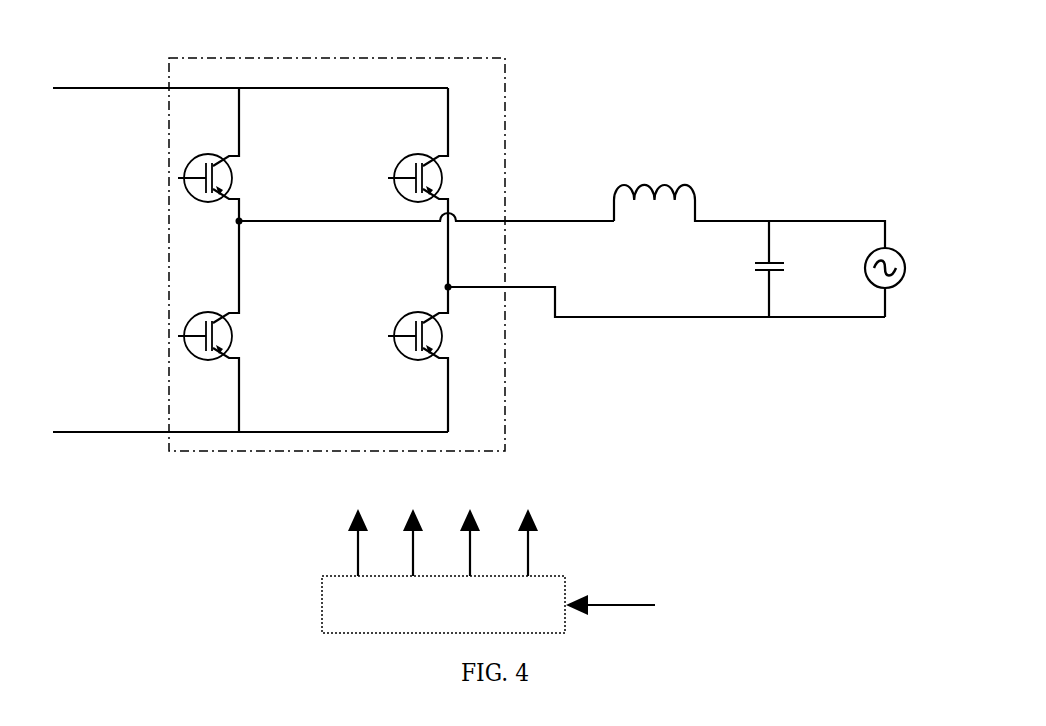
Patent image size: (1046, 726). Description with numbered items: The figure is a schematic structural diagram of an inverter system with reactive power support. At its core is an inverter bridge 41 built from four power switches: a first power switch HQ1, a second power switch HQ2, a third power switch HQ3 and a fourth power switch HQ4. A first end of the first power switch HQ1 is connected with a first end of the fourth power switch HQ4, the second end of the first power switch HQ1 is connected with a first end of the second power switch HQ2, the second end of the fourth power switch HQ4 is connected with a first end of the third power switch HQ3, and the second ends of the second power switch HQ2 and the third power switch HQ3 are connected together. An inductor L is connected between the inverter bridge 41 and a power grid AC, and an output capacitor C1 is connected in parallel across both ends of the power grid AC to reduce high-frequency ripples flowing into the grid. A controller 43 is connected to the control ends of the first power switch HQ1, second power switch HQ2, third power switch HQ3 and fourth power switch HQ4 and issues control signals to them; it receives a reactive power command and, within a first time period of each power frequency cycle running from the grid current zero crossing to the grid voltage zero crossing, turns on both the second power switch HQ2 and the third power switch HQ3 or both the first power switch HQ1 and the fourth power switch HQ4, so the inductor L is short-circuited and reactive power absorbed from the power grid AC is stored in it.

The inverter bridge 41 is at (261, 58).
The controller 43 is at (322, 605).
The first power switch HQ1 is at (235, 154).
The second power switch HQ2 is at (235, 326).
The third power switch HQ3 is at (445, 326).
The fourth power switch HQ4 is at (445, 154).
The inductor L is at (749, 200).
The output capacitor C1 is at (792, 269).
The power grid AC is at (901, 282).